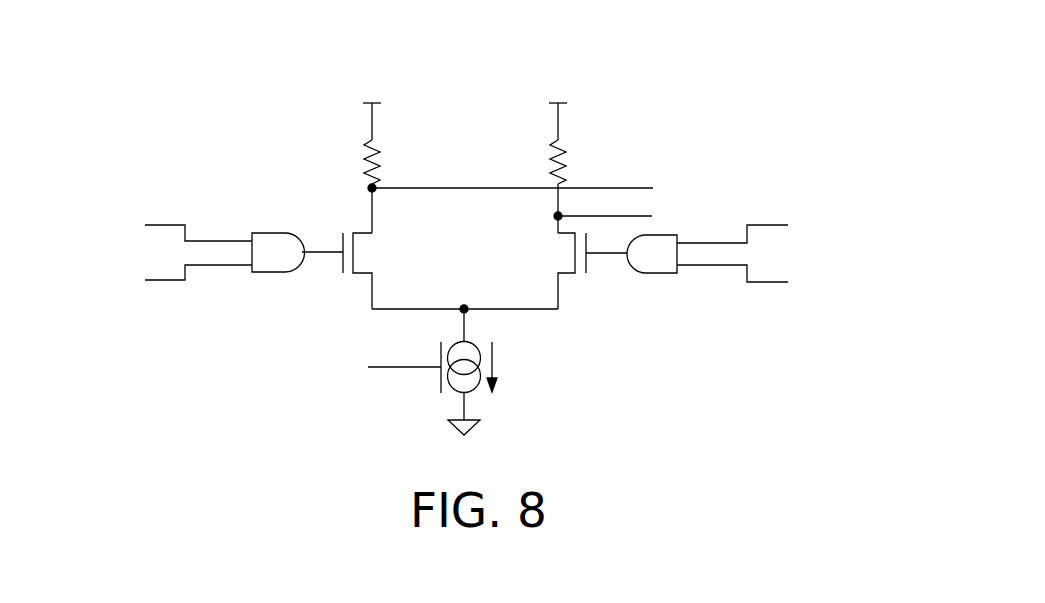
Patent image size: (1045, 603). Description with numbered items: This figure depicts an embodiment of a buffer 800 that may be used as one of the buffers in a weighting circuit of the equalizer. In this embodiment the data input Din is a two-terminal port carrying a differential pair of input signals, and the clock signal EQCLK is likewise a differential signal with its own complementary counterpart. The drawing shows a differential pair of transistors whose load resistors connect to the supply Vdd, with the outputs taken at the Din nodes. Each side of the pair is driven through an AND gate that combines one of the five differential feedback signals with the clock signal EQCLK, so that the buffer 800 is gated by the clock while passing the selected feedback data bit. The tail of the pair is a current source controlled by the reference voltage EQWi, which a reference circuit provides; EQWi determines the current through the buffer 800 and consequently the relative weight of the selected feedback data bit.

The buffer 800 is at (468, 225).
The supply voltage with load resistor Vdd is at (467, 152).
The data input Din is at (530, 188).
The clock signal EQCLK is at (152, 277).
The reference voltage EQWi is at (396, 368).